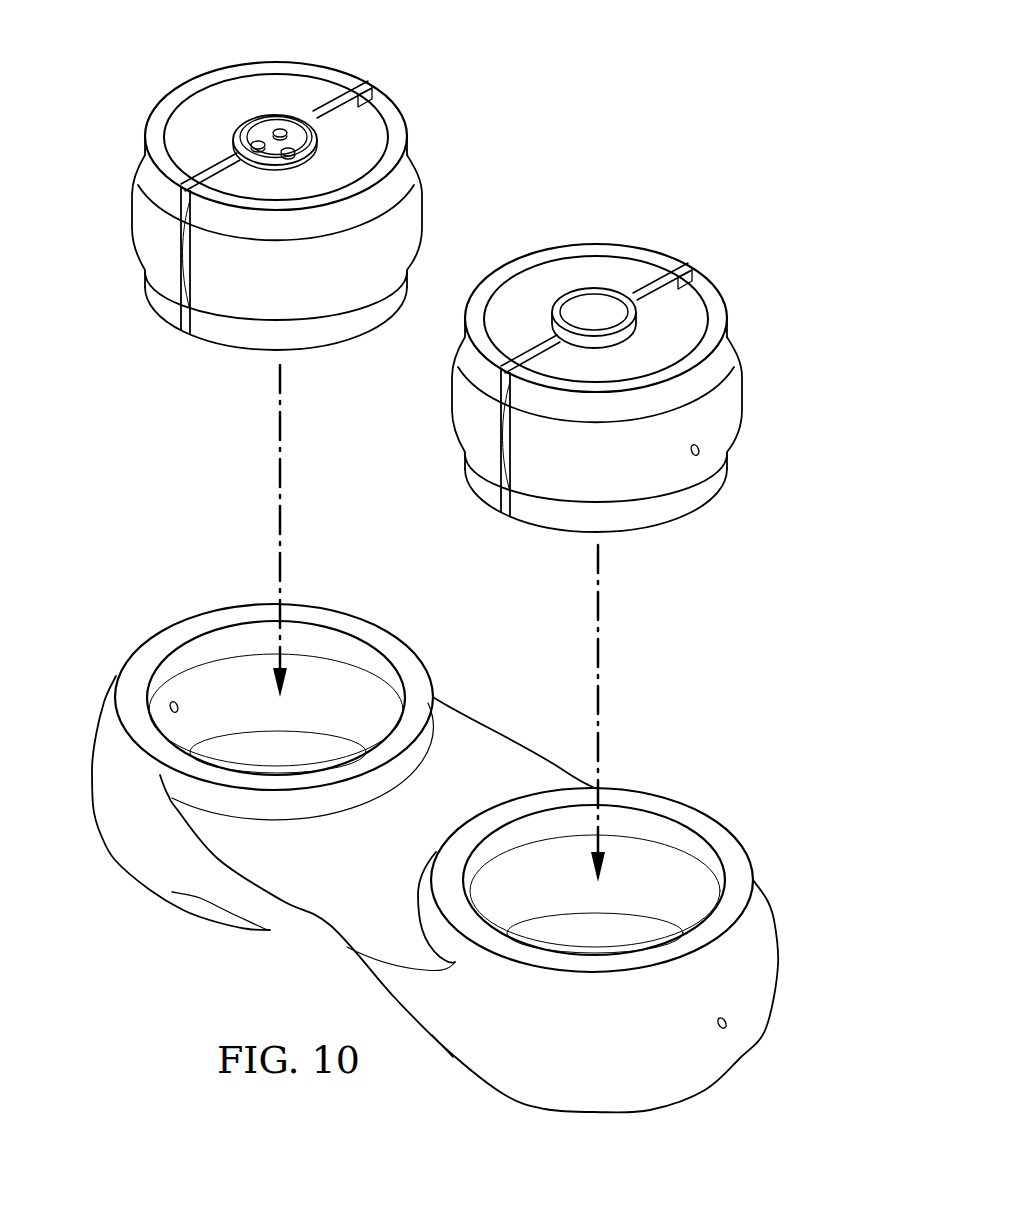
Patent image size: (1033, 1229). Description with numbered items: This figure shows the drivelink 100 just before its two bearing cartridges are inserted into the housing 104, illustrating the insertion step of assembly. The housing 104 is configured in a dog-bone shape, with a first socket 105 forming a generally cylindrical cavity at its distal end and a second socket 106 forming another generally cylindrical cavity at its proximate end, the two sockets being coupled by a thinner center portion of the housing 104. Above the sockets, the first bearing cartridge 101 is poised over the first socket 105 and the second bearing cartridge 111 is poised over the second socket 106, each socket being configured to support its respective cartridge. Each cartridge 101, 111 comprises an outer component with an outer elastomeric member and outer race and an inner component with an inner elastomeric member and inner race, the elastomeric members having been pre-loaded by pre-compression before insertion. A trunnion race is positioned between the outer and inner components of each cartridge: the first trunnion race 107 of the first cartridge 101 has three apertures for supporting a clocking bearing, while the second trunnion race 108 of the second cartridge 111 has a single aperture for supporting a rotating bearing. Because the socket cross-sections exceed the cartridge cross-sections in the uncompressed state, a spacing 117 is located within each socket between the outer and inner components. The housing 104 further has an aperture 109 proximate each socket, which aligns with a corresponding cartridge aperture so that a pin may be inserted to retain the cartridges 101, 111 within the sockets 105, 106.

The drivelink 100 is at (604, 64).
The first bearing cartridge 101 is at (650, 350).
The housing 104 is at (435, 894).
The first socket 105 is at (658, 835).
The second socket 106 is at (338, 652).
The first trunnion race 107 is at (262, 130).
The second trunnion race 108 is at (585, 266).
The housing aperture 109 is at (725, 1018).
The second bearing cartridge 111 is at (271, 176).
The spacing 117 is at (186, 328).